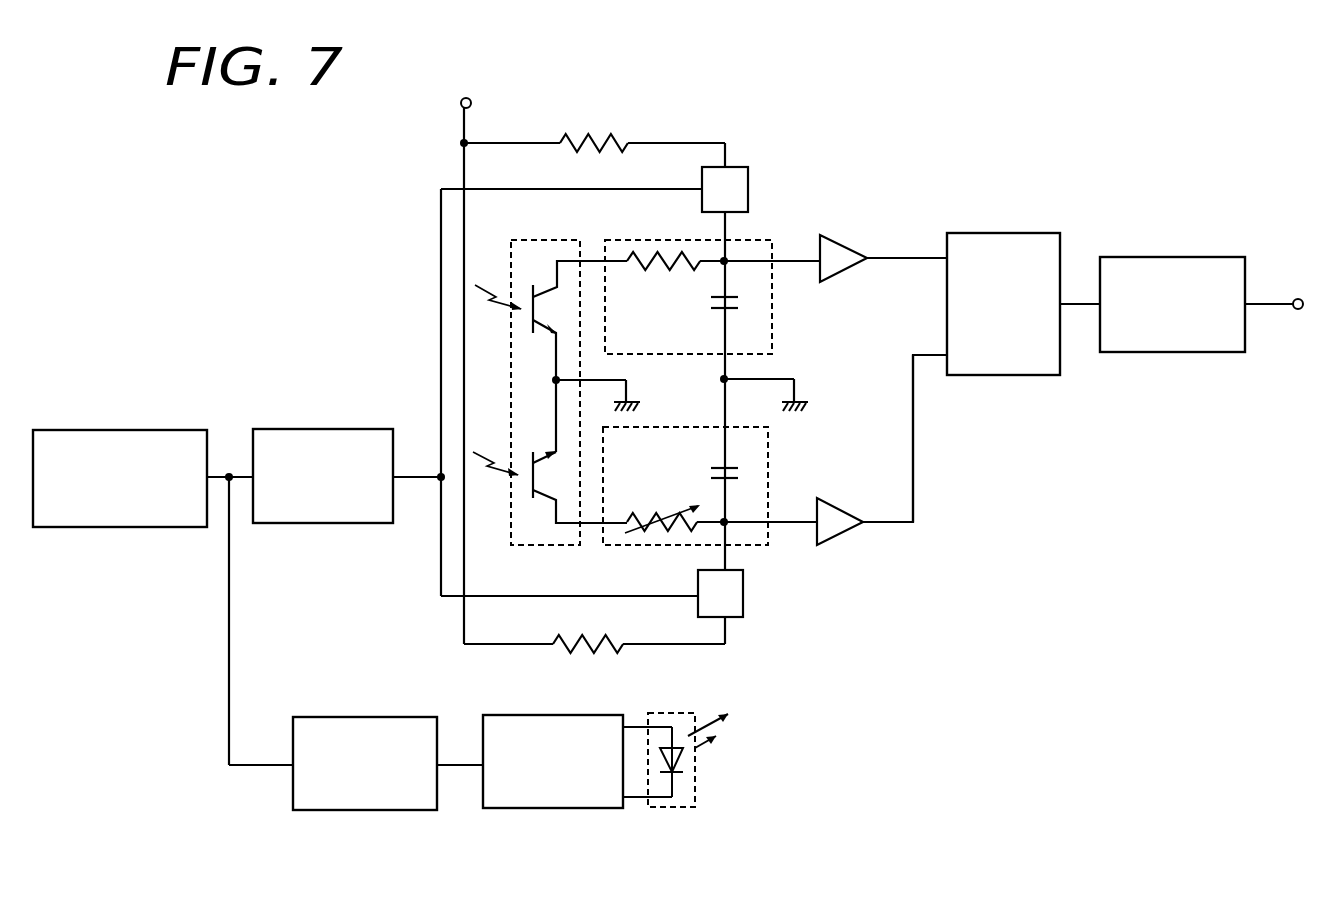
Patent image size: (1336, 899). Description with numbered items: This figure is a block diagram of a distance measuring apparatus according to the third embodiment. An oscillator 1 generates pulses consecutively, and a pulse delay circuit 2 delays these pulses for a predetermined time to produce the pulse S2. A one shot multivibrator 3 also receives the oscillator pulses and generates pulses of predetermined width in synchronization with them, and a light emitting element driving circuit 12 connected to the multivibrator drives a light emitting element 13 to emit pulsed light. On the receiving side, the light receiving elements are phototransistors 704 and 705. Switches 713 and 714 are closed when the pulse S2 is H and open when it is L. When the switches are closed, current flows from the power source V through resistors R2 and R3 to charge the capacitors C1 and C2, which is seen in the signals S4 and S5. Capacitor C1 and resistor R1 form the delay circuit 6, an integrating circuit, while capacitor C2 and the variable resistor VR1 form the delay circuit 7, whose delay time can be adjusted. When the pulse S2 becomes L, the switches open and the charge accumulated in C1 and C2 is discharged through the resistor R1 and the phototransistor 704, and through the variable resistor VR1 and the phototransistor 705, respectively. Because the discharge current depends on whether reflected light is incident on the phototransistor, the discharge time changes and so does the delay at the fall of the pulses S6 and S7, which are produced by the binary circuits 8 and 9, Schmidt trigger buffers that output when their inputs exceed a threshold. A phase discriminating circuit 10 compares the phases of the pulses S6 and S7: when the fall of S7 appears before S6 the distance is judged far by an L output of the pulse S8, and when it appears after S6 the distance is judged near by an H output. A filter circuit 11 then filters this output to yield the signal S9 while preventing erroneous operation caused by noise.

The oscillator 1 is at (115, 428).
The pulse delay circuit 2 is at (300, 428).
The one shot multivibrator 3 is at (320, 812).
The delay circuit 6 is at (670, 241).
The delay circuit 7 is at (672, 548).
The binary circuit 8 is at (845, 270).
The binary circuit 9 is at (852, 507).
The phase discriminating circuit 10 is at (1010, 232).
The filter circuit 11 is at (1197, 256).
The light emitting element driving circuit 12 is at (530, 810).
The light emitting element 13 is at (690, 758).
The phototransistor 704 is at (538, 277).
The phototransistor 705 is at (542, 520).
The switch 713 is at (749, 182).
The switch 714 is at (745, 612).
The resistor R1 is at (668, 269).
The resistor R2 is at (598, 134).
The resistor R3 is at (592, 648).
The variable resistor VR1 is at (660, 512).
The capacitor C1 is at (740, 311).
The capacitor C2 is at (740, 479).
The power source V is at (461, 103).
The pulse S2 is at (413, 480).
The signal S4 is at (726, 258).
The signal S5 is at (728, 525).
The pulse S6 is at (917, 256).
The pulse S7 is at (913, 525).
The pulse S8 is at (1072, 310).
The signal S9 is at (1262, 310).